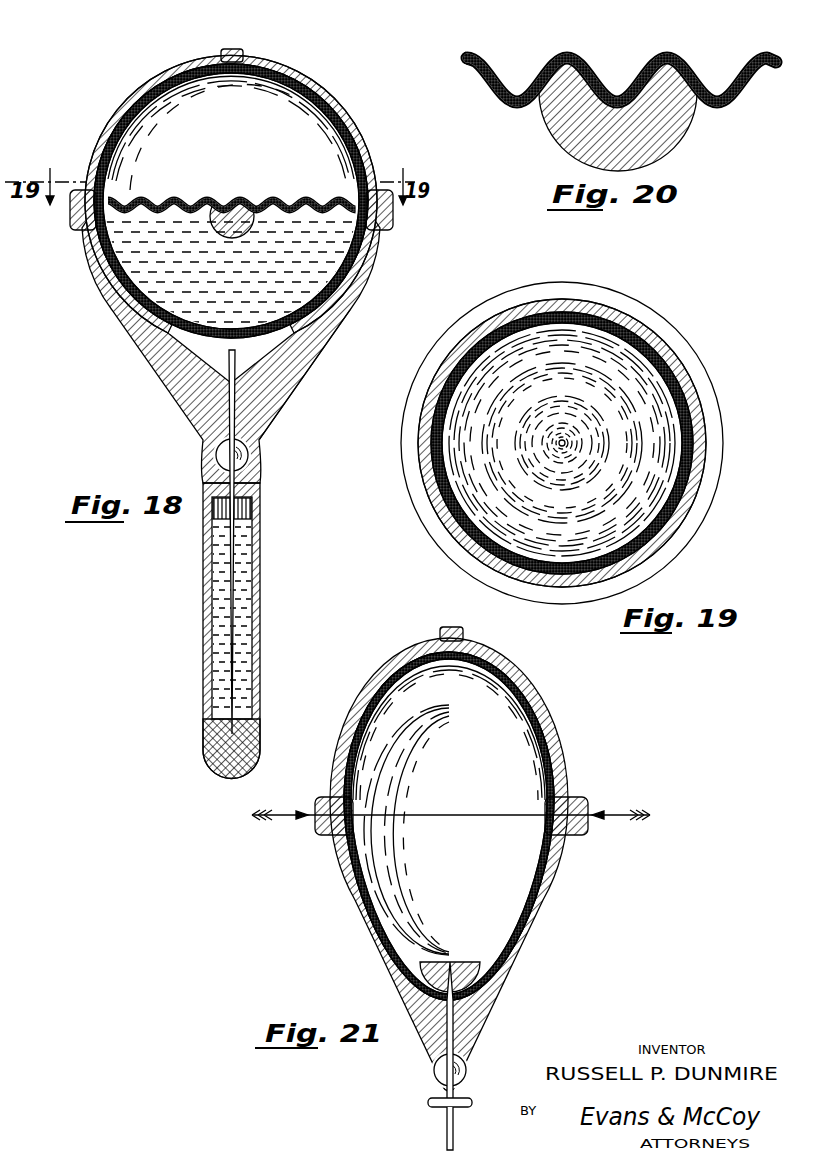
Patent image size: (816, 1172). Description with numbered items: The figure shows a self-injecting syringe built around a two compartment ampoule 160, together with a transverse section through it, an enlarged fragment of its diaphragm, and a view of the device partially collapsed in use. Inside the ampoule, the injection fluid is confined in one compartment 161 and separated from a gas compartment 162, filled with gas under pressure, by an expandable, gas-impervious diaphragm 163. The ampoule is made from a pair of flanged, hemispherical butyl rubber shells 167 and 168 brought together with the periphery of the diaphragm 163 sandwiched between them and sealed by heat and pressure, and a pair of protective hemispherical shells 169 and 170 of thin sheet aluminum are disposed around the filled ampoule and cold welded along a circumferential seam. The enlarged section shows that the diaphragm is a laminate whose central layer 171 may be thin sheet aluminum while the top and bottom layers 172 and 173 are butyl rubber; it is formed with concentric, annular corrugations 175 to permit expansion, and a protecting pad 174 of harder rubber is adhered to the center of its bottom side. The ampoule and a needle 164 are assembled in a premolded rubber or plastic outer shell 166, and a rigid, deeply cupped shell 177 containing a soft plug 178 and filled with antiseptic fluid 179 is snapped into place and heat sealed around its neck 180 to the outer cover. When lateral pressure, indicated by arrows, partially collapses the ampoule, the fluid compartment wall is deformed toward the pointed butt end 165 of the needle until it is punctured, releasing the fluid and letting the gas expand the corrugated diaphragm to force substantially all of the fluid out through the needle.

In FIG. 18, the two compartment ampoule 160 is at (125, 116).
In FIG. 19, the two compartment ampoule 160 is at (433, 393).
In FIG. 18, the injection fluid compartment 161 is at (343, 258).
In FIG. 18, the gas compartment 162 is at (282, 105).
In FIG. 18, the diaphragm 163 is at (291, 195).
In FIG. 20, the diaphragm 163 is at (599, 52).
In FIG. 19, the diaphragm 163 is at (522, 355).
In FIG. 21, the diaphragm 163 is at (405, 922).
In FIG. 18, the needle 164 is at (233, 508).
In FIG. 21, the needle 164 is at (447, 1130).
In FIG. 18, the pointed butt end 165 is at (241, 358).
In FIG. 21, the pointed butt end 165 is at (440, 960).
In FIG. 18, the outer shell 166 is at (105, 145).
In FIG. 19, the outer shell 166 is at (445, 525).
In FIG. 21, the outer shell 166 is at (550, 722).
In FIG. 18, the flanged hemispherical shell 167 is at (103, 290).
In FIG. 21, the flanged hemispherical shell 167 is at (340, 897).
In FIG. 18, the flanged hemispherical shell 168 is at (197, 60).
In FIG. 19, the flanged hemispherical shell 168 is at (420, 438).
In FIG. 21, the flanged hemispherical shell 168 is at (540, 724).
In FIG. 18, the protective hemispherical shell 169 is at (153, 84).
In FIG. 19, the protective hemispherical shell 169 is at (460, 355).
In FIG. 21, the protective hemispherical shell 169 is at (380, 685).
In FIG. 18, the protective hemispherical shell 170 is at (143, 358).
In FIG. 20, the central layer 171 is at (468, 60).
In FIG. 20, the top layer 172 is at (470, 68).
In FIG. 20, the bottom layer 173 is at (468, 55).
In FIG. 18, the protecting pad 174 is at (250, 222).
In FIG. 20, the protecting pad 174 is at (548, 122).
In FIG. 21, the protecting pad 174 is at (466, 958).
In FIG. 18, the concentric annular corrugations 175 is at (179, 203).
In FIG. 20, the concentric annular corrugations 175 is at (668, 52).
In FIG. 19, the concentric annular corrugations 175 is at (630, 408).
In FIG. 18, the deeply cupped shell 177 is at (203, 663).
In FIG. 18, the soft plug 178 is at (205, 752).
In FIG. 18, the antiseptic fluid 179 is at (203, 587).
In FIG. 18, the neck 180 is at (250, 481).